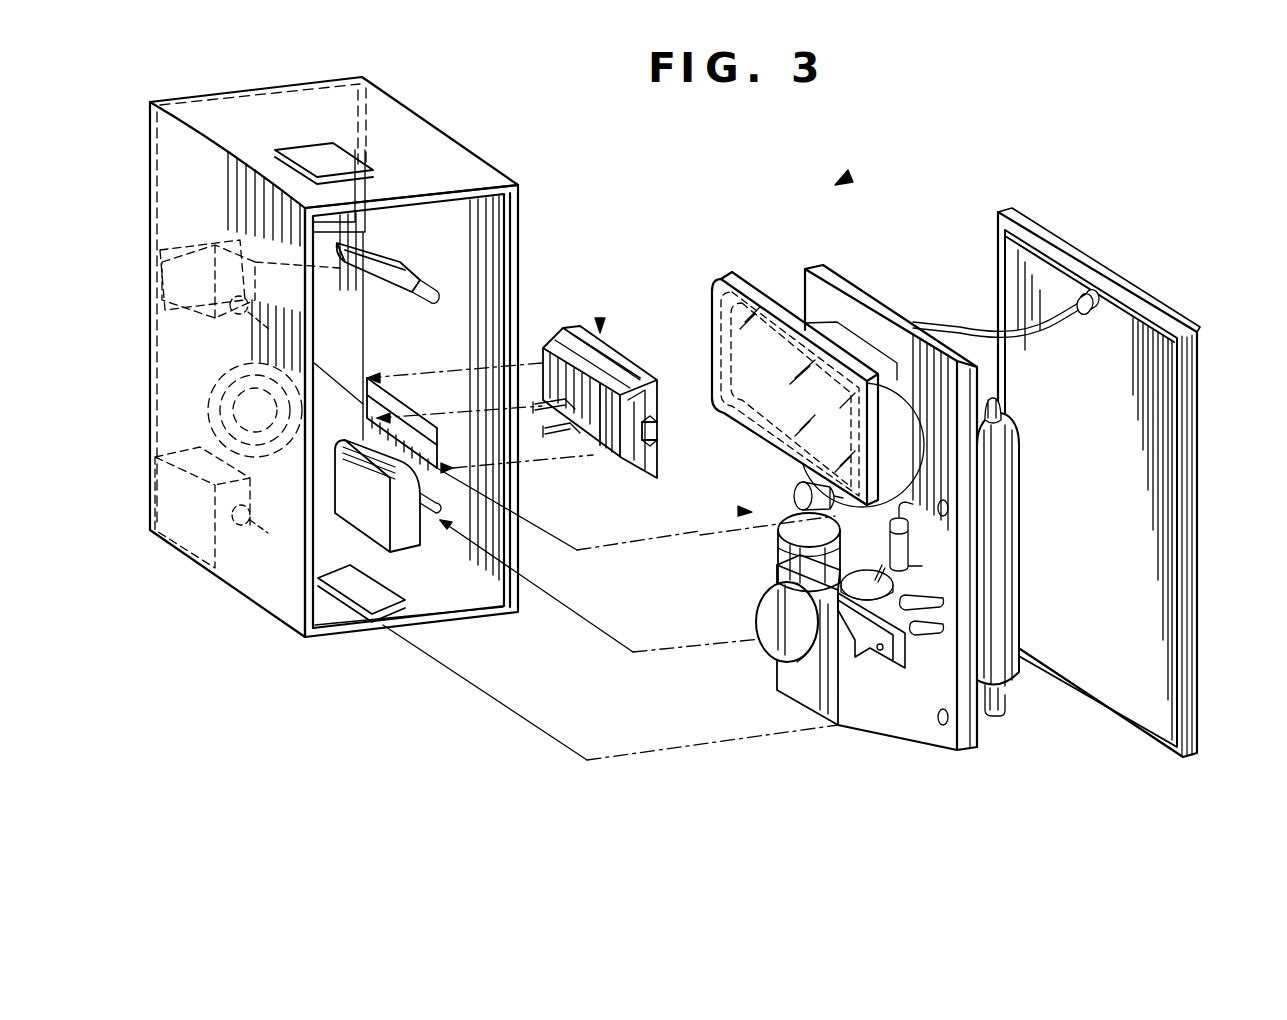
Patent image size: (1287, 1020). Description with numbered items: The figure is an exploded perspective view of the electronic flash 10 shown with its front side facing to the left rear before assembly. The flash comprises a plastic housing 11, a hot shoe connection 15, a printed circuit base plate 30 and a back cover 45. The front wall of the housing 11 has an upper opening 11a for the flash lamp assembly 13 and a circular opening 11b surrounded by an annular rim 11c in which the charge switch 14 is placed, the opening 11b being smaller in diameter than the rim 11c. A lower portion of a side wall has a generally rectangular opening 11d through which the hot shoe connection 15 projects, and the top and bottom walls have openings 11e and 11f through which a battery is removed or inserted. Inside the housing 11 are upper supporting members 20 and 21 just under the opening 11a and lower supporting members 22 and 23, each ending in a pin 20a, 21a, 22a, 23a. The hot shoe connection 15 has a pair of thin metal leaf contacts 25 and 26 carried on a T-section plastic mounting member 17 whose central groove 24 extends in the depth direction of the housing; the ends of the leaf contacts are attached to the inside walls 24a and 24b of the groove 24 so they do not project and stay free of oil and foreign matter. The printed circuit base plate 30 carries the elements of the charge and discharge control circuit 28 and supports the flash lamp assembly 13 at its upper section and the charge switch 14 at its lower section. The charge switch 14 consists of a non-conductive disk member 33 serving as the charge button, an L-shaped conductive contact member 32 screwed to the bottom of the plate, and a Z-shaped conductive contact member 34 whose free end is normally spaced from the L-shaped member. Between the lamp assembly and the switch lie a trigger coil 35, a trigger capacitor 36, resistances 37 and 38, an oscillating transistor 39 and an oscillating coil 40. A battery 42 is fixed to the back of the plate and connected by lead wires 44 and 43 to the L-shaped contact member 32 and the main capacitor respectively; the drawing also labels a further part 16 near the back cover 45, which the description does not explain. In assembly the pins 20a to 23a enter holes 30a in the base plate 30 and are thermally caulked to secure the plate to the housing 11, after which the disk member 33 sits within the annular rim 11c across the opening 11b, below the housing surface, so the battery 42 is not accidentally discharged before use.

The electronic flash 10 is at (840, 180).
The housing 11 is at (430, 132).
The opening 11a is at (207, 235).
The circular opening 11b is at (222, 411).
The annular rim 11c is at (222, 368).
The rectangular opening 11d is at (395, 405).
The top wall opening 11e is at (313, 148).
The bottom wall opening 11f is at (380, 588).
The flash lamp assembly 13 is at (762, 322).
The charge switch 14 is at (815, 685).
The hot shoe connection 15 is at (600, 333).
The plug 16 is at (1087, 313).
The mounting member 17 is at (655, 383).
The upper supporting member 20 is at (400, 263).
The pin 20a is at (427, 292).
The upper supporting member 21 is at (243, 283).
The pin 21a is at (258, 308).
The lower supporting member 22 is at (350, 447).
The pin 22a is at (428, 497).
The lower supporting member 23 is at (230, 483).
The pin 23a is at (190, 553).
The central groove 24 is at (655, 433).
The inside wall of groove 24a is at (652, 425).
The inside wall of groove 24b is at (660, 440).
The leaf contact 25 is at (612, 372).
The leaf contact 26 is at (590, 455).
The charge and discharge control circuit 28 is at (745, 511).
The printed circuit base plate 30 is at (880, 305).
The holes 30a is at (940, 503).
The L-shaped conductive contact member 32 is at (805, 692).
The non-conductive disk member 33 is at (772, 643).
The Z-shaped conductive contact member 34 is at (880, 647).
The trigger coil 35 is at (910, 547).
The trigger capacitor 36 is at (865, 575).
The resistance 37 is at (925, 600).
The resistance 38 is at (930, 640).
The oscillating transistor 39 is at (795, 497).
The oscillating coil 40 is at (778, 553).
The battery 42 is at (1020, 478).
The lead wire 43 is at (980, 403).
The lead wire 44 is at (995, 708).
The back cover 45 is at (1205, 480).